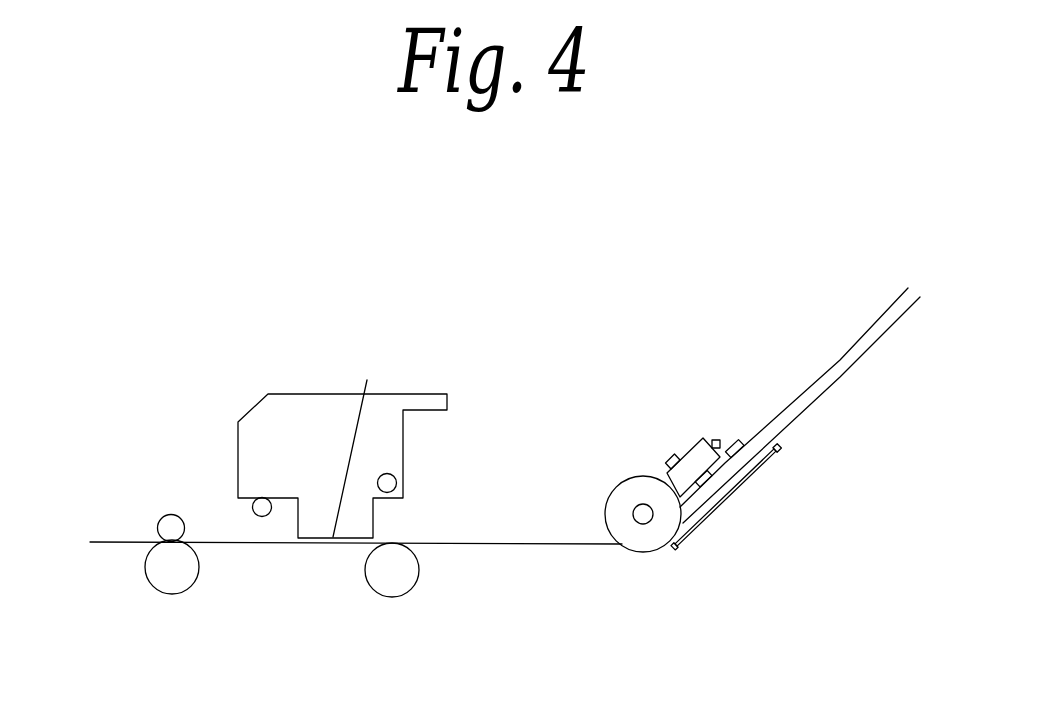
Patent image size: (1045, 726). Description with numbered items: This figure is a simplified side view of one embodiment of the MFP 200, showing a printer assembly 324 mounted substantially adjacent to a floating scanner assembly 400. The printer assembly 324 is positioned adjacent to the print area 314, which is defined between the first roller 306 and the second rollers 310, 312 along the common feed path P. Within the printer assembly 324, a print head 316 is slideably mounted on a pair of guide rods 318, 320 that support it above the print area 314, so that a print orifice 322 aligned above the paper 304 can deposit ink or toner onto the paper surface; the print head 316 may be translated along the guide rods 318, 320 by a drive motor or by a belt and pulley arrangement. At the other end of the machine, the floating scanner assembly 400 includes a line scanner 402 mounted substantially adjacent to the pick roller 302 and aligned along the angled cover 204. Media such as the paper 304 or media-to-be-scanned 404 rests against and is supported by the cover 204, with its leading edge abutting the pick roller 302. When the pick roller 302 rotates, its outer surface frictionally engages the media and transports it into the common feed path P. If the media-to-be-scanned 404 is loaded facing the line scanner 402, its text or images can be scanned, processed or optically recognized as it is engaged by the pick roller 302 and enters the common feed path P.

The MFP 200 is at (538, 301).
The cover 204 is at (827, 392).
The pick roller 302 is at (622, 547).
The paper 304 is at (760, 390).
The media-to-be-scanned 404 is at (816, 374).
The first roller 306 is at (390, 594).
The second roller 310 is at (158, 587).
The second roller 312 is at (168, 511).
The print area 314 is at (268, 562).
The print head 316 is at (305, 393).
The guide rod 318 is at (264, 508).
The guide rod 320 is at (397, 472).
The print orifice 322 is at (367, 380).
The printer assembly 324 is at (226, 338).
The floating scanner assembly 400 is at (693, 420).
The line scanner 402 is at (715, 444).
The common feed path P is at (110, 546).